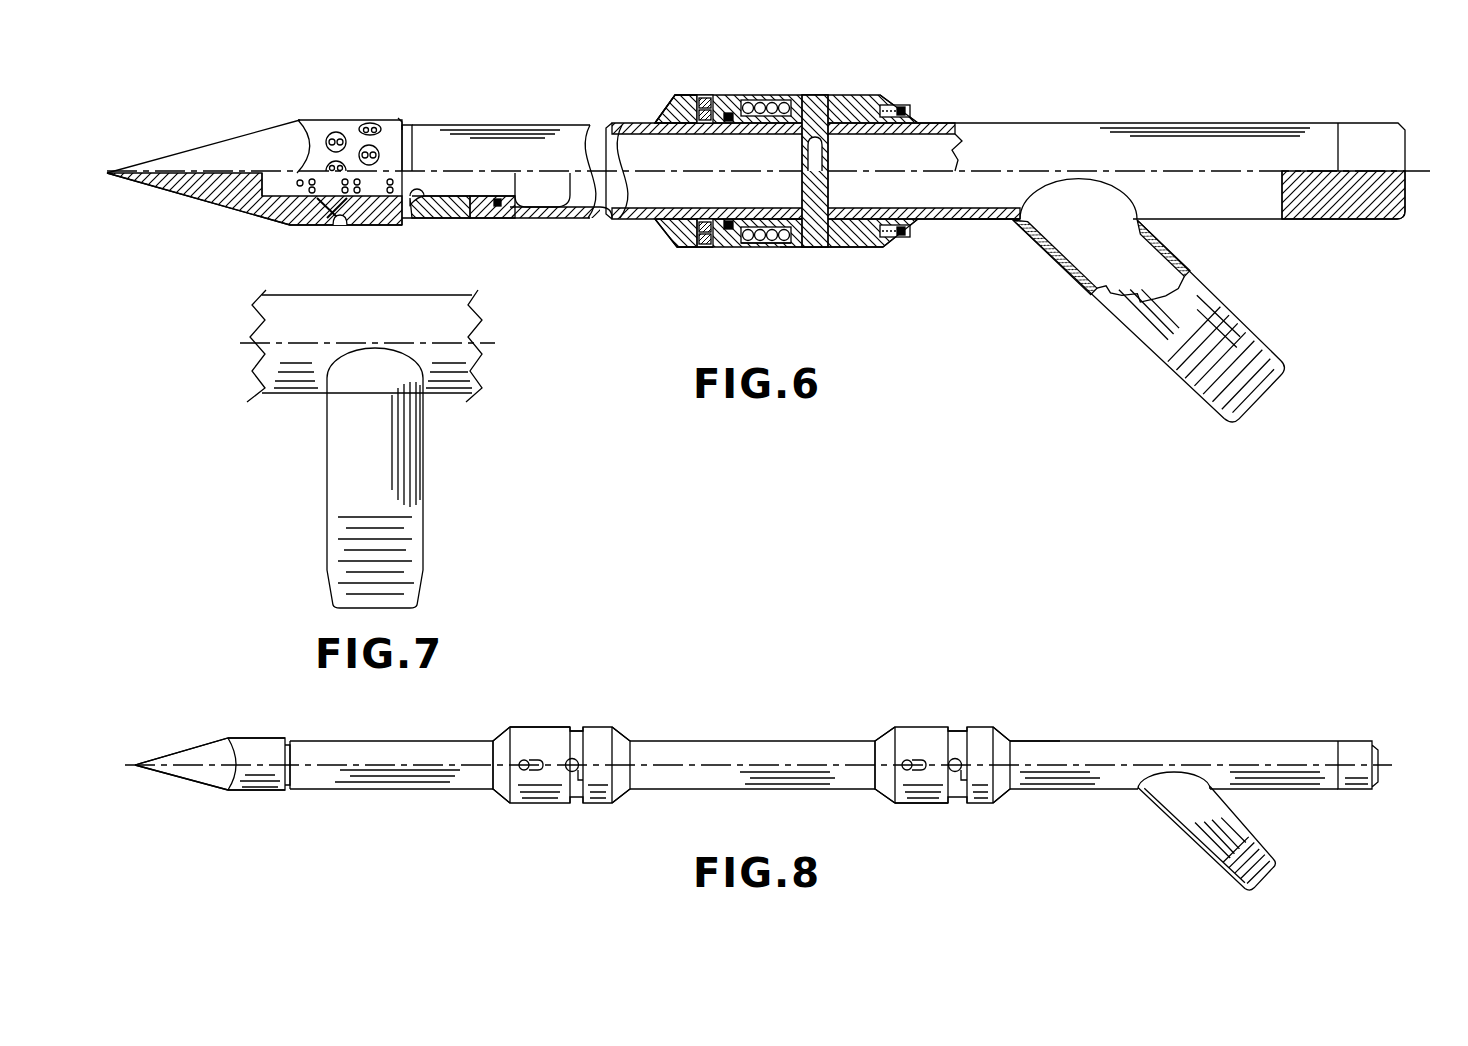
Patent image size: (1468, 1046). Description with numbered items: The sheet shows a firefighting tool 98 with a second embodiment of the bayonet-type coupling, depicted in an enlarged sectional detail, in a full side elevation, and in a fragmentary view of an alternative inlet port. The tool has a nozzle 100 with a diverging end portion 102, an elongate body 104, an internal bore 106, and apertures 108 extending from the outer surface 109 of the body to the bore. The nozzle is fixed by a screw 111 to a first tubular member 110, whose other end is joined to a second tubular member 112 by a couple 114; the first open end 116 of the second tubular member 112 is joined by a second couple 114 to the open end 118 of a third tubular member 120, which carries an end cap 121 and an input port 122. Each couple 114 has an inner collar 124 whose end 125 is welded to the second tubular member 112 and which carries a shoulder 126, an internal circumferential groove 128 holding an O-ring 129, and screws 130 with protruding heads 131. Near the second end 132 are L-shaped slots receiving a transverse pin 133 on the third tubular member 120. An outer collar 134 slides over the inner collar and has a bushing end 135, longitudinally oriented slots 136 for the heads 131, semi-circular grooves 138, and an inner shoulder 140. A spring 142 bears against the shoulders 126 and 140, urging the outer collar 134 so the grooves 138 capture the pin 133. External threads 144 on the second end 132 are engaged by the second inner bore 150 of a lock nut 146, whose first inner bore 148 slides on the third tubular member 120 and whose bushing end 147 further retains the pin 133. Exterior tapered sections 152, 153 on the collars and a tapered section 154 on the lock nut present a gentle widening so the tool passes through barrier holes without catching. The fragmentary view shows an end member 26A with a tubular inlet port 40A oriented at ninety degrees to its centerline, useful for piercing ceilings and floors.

In FIG. 7, the end member 26A is at (447, 395).
In FIG. 7, the tubular inlet port 40A is at (424, 520).
In FIG. 8, the firefighting tool 98 is at (1058, 728).
In FIG. 6, the nozzle 100 is at (283, 120).
In FIG. 8, the nozzle 100 is at (245, 736).
In FIG. 6, the diverging end portion 102 is at (205, 200).
In FIG. 8, the diverging end portion 102 is at (195, 748).
In FIG. 6, the elongate body 104 is at (343, 118).
In FIG. 8, the elongate body 104 is at (249, 795).
In FIG. 6, the internal bore 106 is at (432, 210).
In FIG. 6, the apertures 108 is at (336, 226).
In FIG. 6, the outer surface 109 is at (398, 118).
In FIG. 6, the first tubular member 110 is at (562, 120).
In FIG. 8, the first tubular member 110 is at (318, 792).
In FIG. 6, the screw 111 is at (490, 212).
In FIG. 6, the second tubular member 112 is at (617, 214).
In FIG. 8, the second tubular member 112 is at (757, 791).
In FIG. 6, the couple 114 is at (880, 95).
In FIG. 8, the couple 114 is at (541, 727).
In FIG. 6, the first open end 116 is at (690, 250).
In FIG. 6, the open end 118 is at (768, 250).
In FIG. 6, the third tubular member 120 is at (1008, 221).
In FIG. 8, the third tubular member 120 is at (1257, 738).
In FIG. 6, the end cap 121 is at (1378, 118).
In FIG. 8, the end cap 121 is at (1360, 738).
In FIG. 6, the input port 122 is at (1212, 275).
In FIG. 8, the input port 122 is at (1245, 822).
In FIG. 6, the inner collar 124 is at (812, 97).
In FIG. 6, the end 125 is at (655, 103).
In FIG. 6, the shoulder 126 is at (752, 100).
In FIG. 6, the internal circumferential groove 128 is at (713, 95).
In FIG. 6, the O-ring 129 is at (728, 112).
In FIG. 6, the screws 130 is at (668, 98).
In FIG. 6, the protruding heads 131 is at (702, 96).
In FIG. 8, the protruding heads 131 is at (526, 762).
In FIG. 6, the second end 132 is at (903, 108).
In FIG. 6, the transverse pin 133 is at (822, 250).
In FIG. 6, the outer collar 134 is at (790, 95).
In FIG. 8, the outer collar 134 is at (515, 802).
In FIG. 8, the bushing end 135 is at (577, 805).
In FIG. 8, the longitudinally oriented slots 136 is at (530, 758).
In FIG. 8, the semi-circular grooves 138 is at (567, 772).
In FIG. 6, the inner shoulder 140 is at (790, 250).
In FIG. 6, the spring 142 is at (797, 250).
In FIG. 6, the external threads 144 is at (880, 245).
In FIG. 6, the lock nut 146 is at (928, 118).
In FIG. 8, the lock nut 146 is at (624, 731).
In FIG. 8, the bushing end 147 is at (580, 727).
In FIG. 6, the first inner bore 148 is at (918, 222).
In FIG. 6, the second inner bore 150 is at (890, 240).
In FIG. 6, the exterior tapered section 152 is at (660, 238).
In FIG. 8, the exterior tapered section 152 is at (388, 792).
In FIG. 6, the exterior tapered section 153 is at (683, 247).
In FIG. 8, the exterior tapered section 153 is at (493, 782).
In FIG. 6, the tapered section 154 is at (910, 112).
In FIG. 8, the tapered section 154 is at (622, 797).